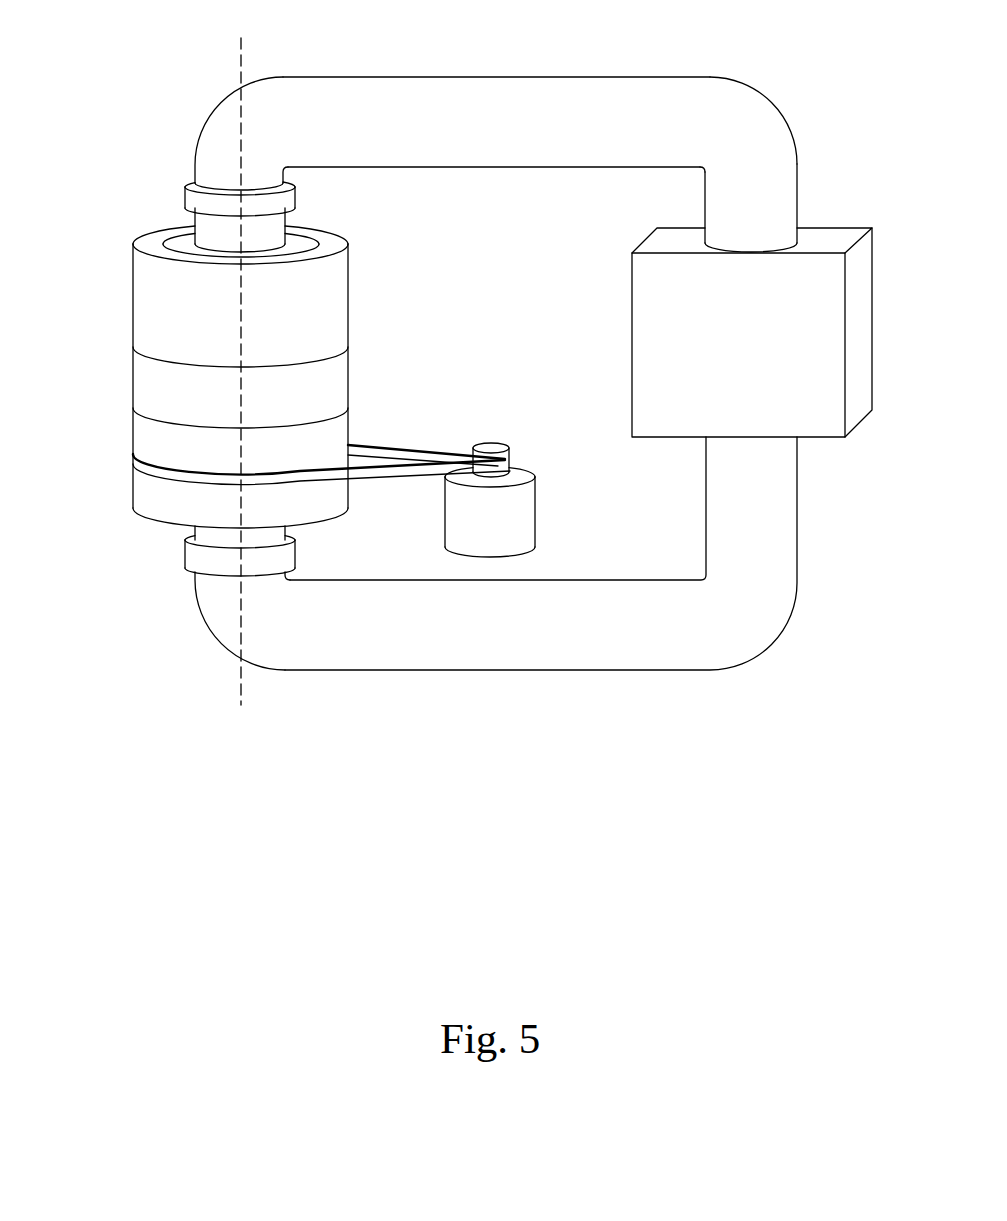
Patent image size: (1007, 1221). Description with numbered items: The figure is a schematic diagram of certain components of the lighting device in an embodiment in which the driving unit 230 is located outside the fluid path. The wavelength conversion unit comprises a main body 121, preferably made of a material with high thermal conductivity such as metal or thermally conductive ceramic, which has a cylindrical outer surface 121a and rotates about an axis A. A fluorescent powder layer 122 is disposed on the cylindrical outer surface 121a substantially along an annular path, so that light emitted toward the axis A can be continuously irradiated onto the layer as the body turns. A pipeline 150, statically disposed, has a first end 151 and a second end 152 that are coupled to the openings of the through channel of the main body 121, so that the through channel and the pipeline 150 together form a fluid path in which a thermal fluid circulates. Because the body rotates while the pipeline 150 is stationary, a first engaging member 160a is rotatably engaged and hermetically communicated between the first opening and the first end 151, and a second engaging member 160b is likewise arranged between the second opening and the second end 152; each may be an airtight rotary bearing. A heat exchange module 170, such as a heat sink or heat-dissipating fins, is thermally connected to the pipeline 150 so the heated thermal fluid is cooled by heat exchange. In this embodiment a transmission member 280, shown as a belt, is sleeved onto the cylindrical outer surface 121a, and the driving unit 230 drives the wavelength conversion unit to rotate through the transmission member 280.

The axis A is at (238, 60).
The pipeline 150 is at (467, 104).
The first end 151 is at (218, 150).
The second end 152 is at (208, 588).
The first engaging member 160a is at (192, 193).
The second engaging member 160b is at (193, 555).
The main body 121 is at (148, 240).
The cylindrical outer surface 121a is at (142, 312).
The fluorescent powder layer 122 is at (142, 383).
The transmission member 280 is at (387, 452).
The driving unit 230 is at (522, 518).
The heat exchange module 170 is at (860, 320).